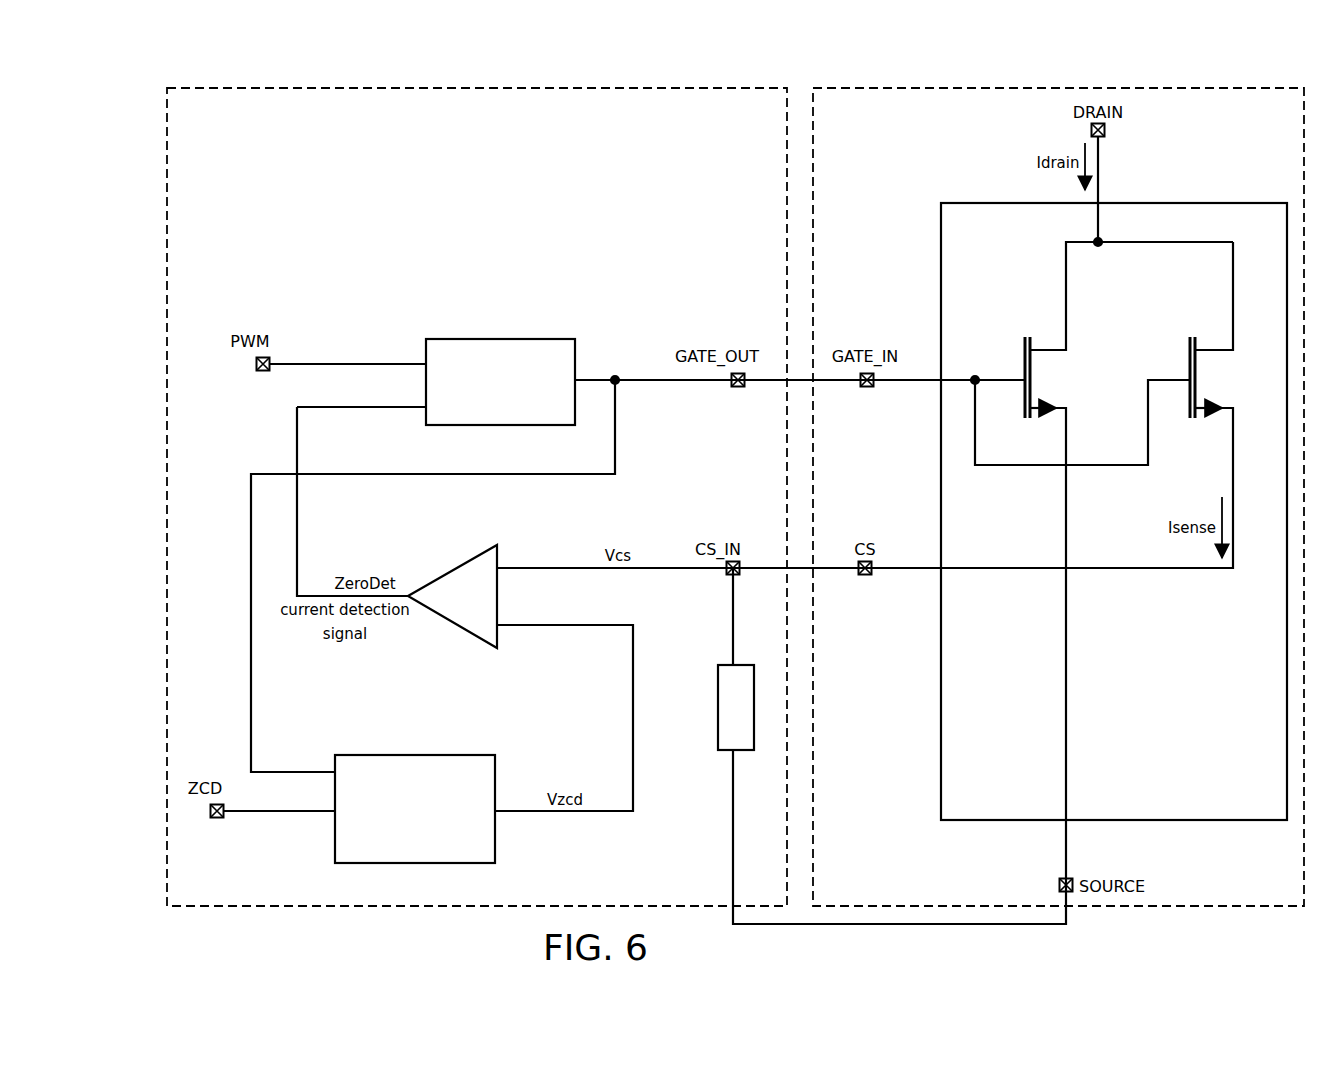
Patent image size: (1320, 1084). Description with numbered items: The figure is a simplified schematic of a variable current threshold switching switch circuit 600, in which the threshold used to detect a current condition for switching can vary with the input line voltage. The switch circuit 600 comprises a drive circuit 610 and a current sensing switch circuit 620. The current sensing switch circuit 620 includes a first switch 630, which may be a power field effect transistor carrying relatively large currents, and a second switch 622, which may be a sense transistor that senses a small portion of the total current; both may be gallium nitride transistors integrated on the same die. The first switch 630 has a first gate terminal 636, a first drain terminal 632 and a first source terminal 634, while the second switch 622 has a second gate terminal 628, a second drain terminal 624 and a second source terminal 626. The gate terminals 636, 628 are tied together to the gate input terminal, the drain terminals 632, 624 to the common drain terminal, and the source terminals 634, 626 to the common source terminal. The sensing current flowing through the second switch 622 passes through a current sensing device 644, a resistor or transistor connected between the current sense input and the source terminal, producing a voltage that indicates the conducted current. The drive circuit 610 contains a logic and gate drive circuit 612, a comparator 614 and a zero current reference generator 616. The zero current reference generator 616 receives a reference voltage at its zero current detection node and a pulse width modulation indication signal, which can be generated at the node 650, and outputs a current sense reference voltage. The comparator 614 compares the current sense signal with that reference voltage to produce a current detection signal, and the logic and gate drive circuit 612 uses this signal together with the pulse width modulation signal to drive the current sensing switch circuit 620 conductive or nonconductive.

The variable current threshold switching switch circuit 600 is at (154, 82).
The drive circuit 610 is at (641, 88).
The current sensing switch circuit 620 is at (1158, 88).
The logic and gate drive circuit 612 is at (478, 339).
The comparator 614 is at (457, 566).
The zero current reference generator 616 is at (340, 863).
The second switch 622 is at (1193, 405).
The second drain terminal 624 is at (1233, 325).
The second source terminal 626 is at (1233, 437).
The second gate terminal 628 is at (1172, 380).
The first switch 630 is at (1093, 531).
The first drain terminal 632 is at (1066, 318).
The first source terminal 634 is at (1066, 413).
The first gate terminal 636 is at (1010, 380).
The current sensing device 644 is at (717, 730).
The node 650 is at (648, 382).